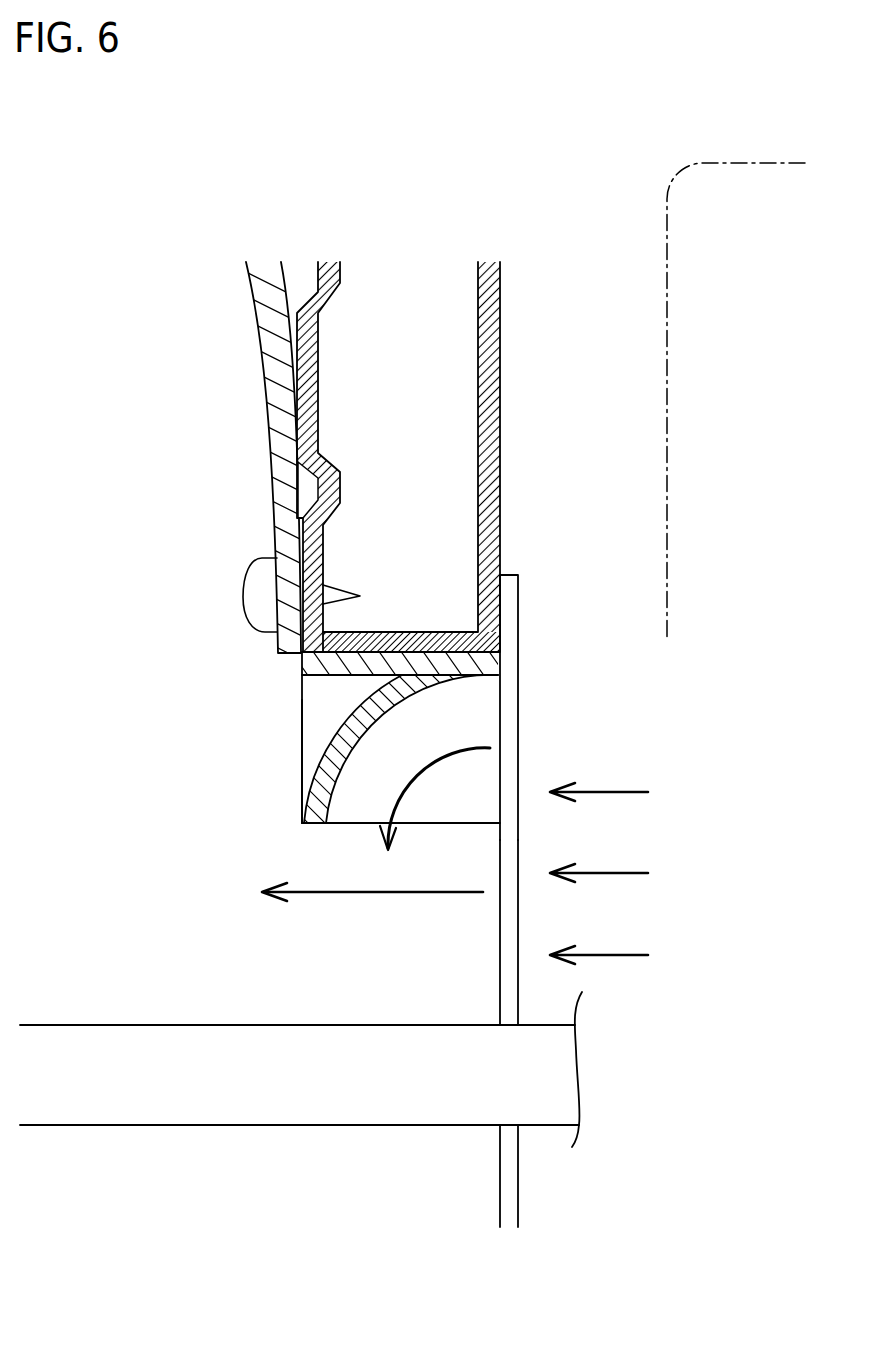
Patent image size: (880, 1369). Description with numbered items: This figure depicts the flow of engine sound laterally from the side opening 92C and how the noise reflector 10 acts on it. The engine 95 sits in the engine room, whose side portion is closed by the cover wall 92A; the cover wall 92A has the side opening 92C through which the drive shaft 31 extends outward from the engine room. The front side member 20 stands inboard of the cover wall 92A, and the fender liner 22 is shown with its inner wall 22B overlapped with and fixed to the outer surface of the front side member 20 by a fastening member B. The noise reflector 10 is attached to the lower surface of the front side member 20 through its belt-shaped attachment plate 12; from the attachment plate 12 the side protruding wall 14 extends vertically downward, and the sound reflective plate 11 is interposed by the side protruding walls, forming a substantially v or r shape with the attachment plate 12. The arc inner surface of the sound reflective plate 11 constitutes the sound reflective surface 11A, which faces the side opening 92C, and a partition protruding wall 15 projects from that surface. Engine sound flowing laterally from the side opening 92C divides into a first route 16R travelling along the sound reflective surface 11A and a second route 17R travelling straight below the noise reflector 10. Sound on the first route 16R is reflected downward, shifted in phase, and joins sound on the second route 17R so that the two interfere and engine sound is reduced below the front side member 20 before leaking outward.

The engine 95 is at (733, 163).
The inner wall 22B is at (272, 298).
The fender liner 22 is at (244, 408).
The front side member 20 is at (498, 347).
The fastening member B is at (243, 596).
The cover wall 92A is at (520, 593).
The side opening 92C is at (505, 917).
The attachment plate 12 is at (302, 663).
The noise reflector 10 is at (217, 655).
The sound reflective plate 11 is at (311, 751).
The sound reflective surface 11A is at (440, 684).
The side protruding wall 14 is at (307, 764).
The partition protruding wall 15 is at (340, 803).
The first route 16R is at (440, 768).
The second route 17R is at (378, 893).
The drive shaft 31 is at (236, 1098).